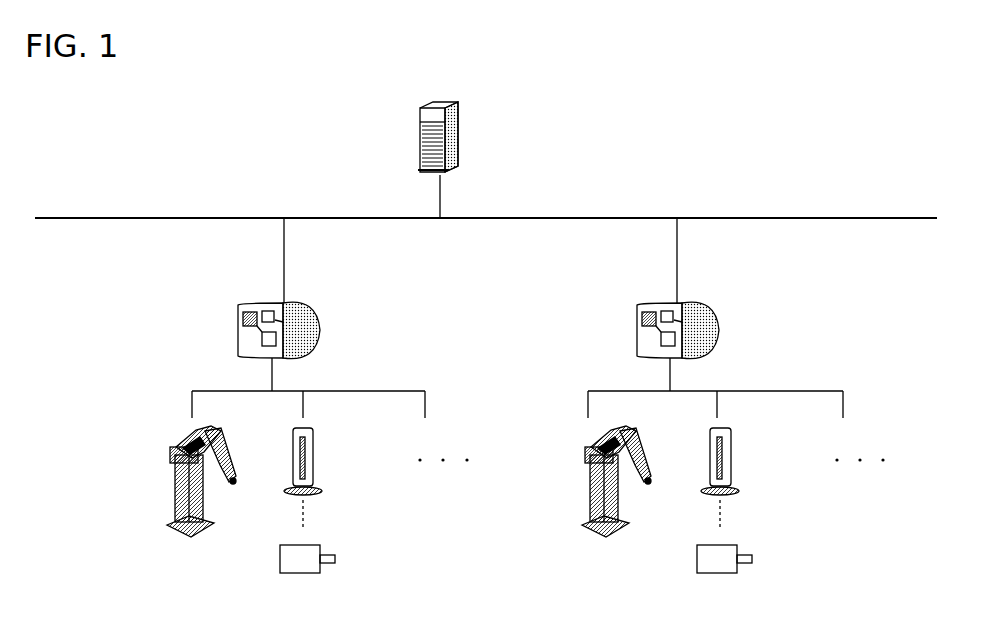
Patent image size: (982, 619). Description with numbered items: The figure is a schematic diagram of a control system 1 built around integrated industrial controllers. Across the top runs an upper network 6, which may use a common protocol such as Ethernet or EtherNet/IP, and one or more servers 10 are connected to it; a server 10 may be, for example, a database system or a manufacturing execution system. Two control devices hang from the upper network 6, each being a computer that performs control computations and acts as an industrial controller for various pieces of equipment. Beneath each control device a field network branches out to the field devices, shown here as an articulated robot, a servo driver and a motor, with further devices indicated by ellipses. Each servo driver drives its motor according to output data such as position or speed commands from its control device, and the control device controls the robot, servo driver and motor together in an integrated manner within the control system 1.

The control system 1 is at (850, 88).
The upper network 6 is at (590, 216).
The server 10 is at (458, 105).